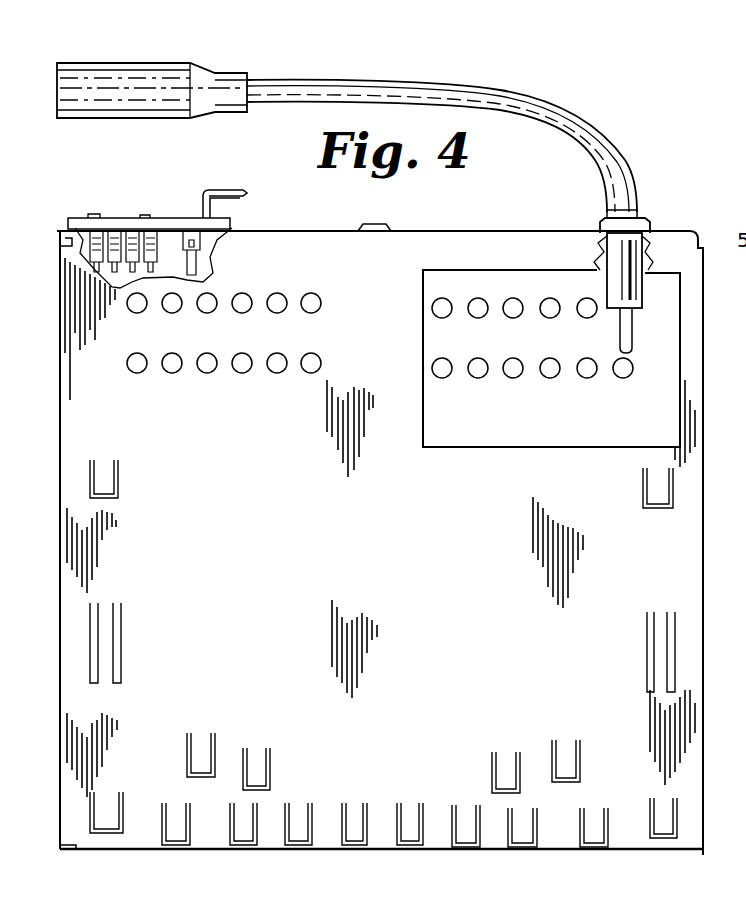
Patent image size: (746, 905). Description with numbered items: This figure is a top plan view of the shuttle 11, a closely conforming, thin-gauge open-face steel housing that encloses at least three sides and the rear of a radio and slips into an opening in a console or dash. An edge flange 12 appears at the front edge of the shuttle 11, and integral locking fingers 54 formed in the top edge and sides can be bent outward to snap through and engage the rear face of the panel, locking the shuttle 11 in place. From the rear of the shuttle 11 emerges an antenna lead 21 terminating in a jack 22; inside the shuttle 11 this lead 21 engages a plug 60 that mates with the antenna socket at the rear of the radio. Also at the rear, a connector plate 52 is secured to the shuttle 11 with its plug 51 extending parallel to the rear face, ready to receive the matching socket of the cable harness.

The shuttle 11 is at (448, 250).
The edge flange 12 is at (684, 853).
The antenna lead 21 is at (334, 90).
The jack 22 is at (172, 90).
The plug 51 is at (210, 190).
The connector plate 52 is at (166, 224).
The locking fingers 54 is at (355, 825).
The plug 60 is at (617, 262).